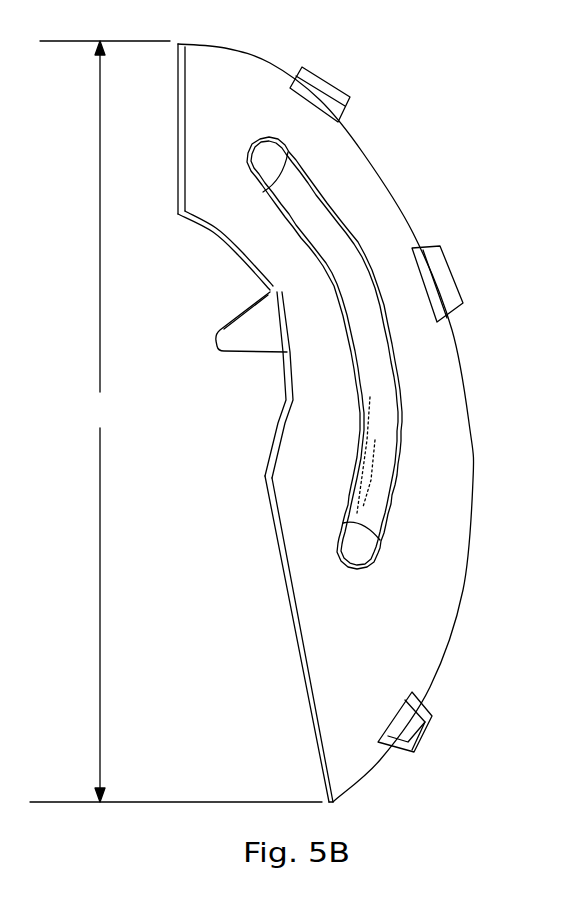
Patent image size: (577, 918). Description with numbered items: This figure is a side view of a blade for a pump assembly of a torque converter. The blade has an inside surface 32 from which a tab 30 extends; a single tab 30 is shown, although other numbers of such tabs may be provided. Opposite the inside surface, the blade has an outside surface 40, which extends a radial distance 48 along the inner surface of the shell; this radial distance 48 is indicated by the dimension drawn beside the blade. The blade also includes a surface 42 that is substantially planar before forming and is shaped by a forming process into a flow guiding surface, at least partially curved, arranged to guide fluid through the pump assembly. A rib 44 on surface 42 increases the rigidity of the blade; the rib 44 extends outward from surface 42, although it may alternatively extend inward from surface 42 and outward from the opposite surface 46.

The tab 30 is at (236, 338).
The inside surface 32 is at (281, 424).
The outside surface 40 is at (466, 370).
The surface 42 is at (432, 569).
The rib 44 is at (323, 218).
The surface 46 is at (270, 510).
The radial distance 48 is at (176, 421).